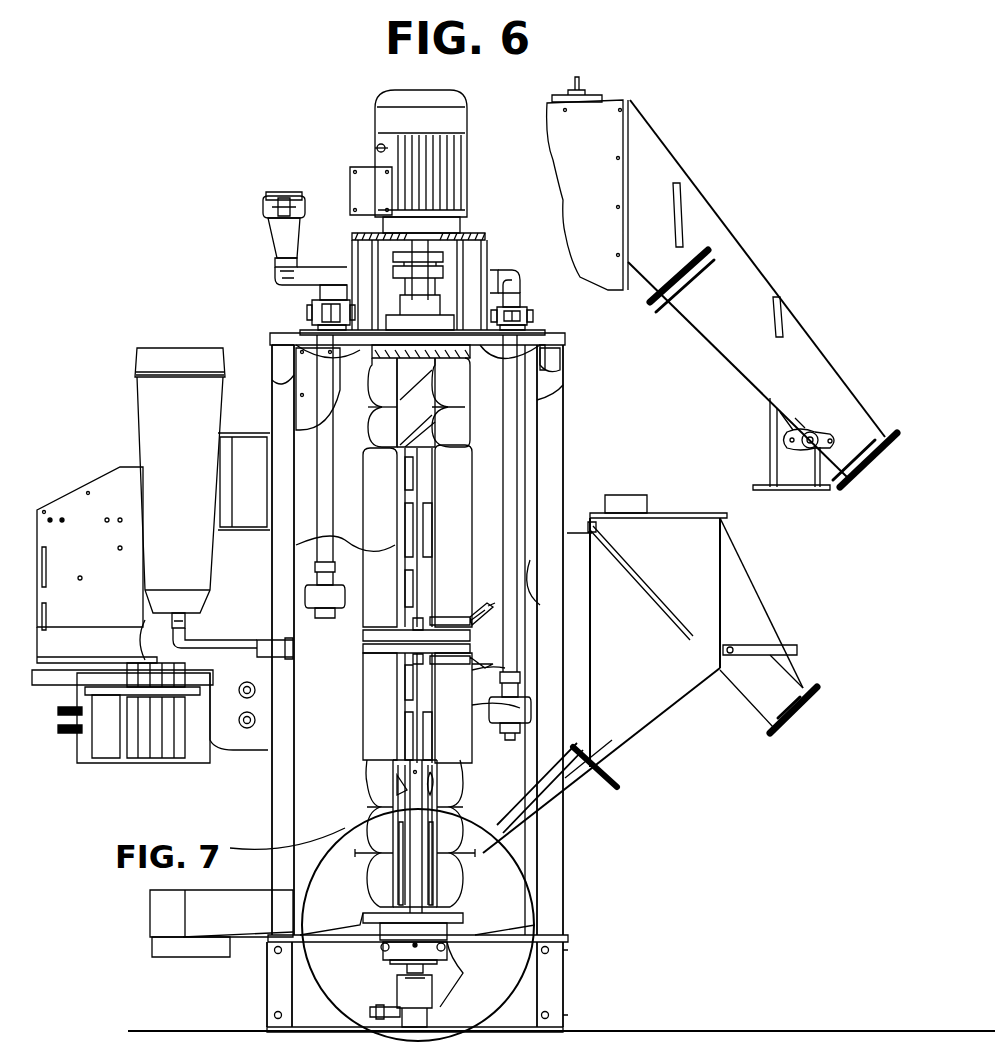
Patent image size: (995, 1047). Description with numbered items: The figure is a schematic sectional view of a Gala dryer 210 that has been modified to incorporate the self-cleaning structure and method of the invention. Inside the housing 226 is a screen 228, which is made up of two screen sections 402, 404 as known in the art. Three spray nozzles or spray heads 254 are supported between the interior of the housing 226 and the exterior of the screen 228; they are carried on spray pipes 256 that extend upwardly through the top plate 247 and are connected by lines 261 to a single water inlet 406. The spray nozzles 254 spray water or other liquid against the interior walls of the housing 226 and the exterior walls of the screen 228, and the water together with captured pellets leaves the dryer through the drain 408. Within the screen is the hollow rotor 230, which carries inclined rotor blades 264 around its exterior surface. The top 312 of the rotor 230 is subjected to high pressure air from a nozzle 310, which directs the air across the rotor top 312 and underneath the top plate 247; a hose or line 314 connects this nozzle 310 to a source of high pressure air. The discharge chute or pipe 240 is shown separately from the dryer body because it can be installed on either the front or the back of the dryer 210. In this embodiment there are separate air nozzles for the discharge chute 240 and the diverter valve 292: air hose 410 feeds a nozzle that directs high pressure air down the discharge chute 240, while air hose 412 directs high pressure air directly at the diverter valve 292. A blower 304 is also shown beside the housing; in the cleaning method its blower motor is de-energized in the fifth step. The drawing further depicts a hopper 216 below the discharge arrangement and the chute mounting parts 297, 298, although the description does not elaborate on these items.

The dryer 210 is at (182, 196).
The hopper 216 is at (700, 579).
The housing 226 is at (545, 395).
The screen 228 is at (368, 700).
The rotor 230 is at (372, 795).
The discharge chute 240 is at (715, 302).
The top plate 247 is at (468, 313).
The spray nozzles 254 is at (325, 620).
The spray pipes 256 is at (320, 562).
The lines 261 is at (322, 297).
The rotor blades 264 is at (372, 830).
The diverter valve 292 is at (775, 420).
The chute flange 297 is at (872, 476).
The support bracket 298 is at (778, 460).
The blower 304 is at (152, 400).
The nozzle 310 is at (540, 370).
The top of the rotor 312 is at (335, 343).
The hose 314 is at (540, 346).
The screen section 402 is at (460, 466).
The screen section 404 is at (455, 692).
The water inlet 406 is at (285, 192).
The drain 408 is at (185, 950).
The air hose 410 is at (690, 193).
The air hose 412 is at (783, 318).